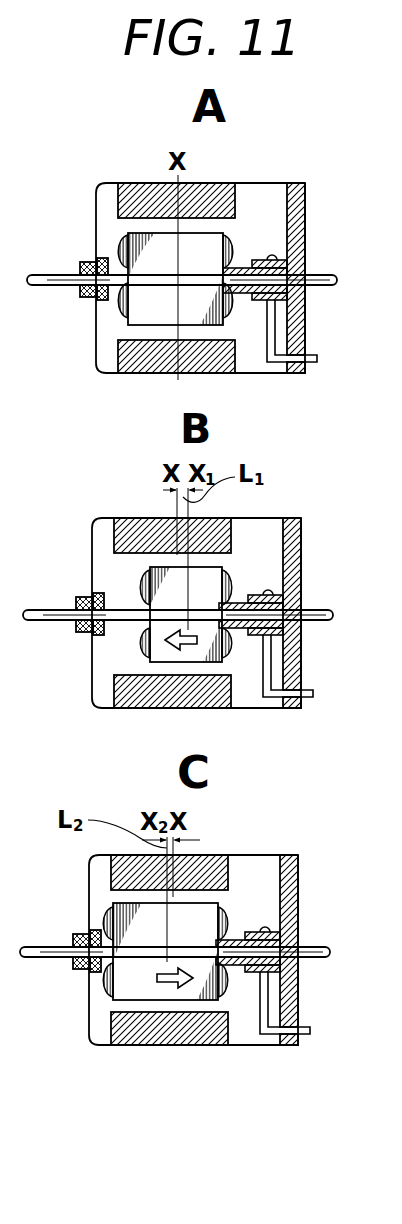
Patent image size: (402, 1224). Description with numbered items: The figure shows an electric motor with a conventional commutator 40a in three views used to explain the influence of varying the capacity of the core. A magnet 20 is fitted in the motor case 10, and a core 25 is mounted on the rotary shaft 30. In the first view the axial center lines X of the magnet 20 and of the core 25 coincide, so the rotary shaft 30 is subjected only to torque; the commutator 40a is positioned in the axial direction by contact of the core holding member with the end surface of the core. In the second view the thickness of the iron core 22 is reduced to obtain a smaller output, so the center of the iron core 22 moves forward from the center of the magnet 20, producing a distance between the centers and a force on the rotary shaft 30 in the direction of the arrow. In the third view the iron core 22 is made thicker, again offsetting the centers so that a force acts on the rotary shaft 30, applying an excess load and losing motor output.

The motor case 10 is at (258, 183).
The magnet 20 is at (198, 183).
The iron core 22 is at (197, 310).
The core 25 is at (153, 291).
The rotary shaft 30 is at (47, 277).
The conventional commutator 40a is at (248, 266).